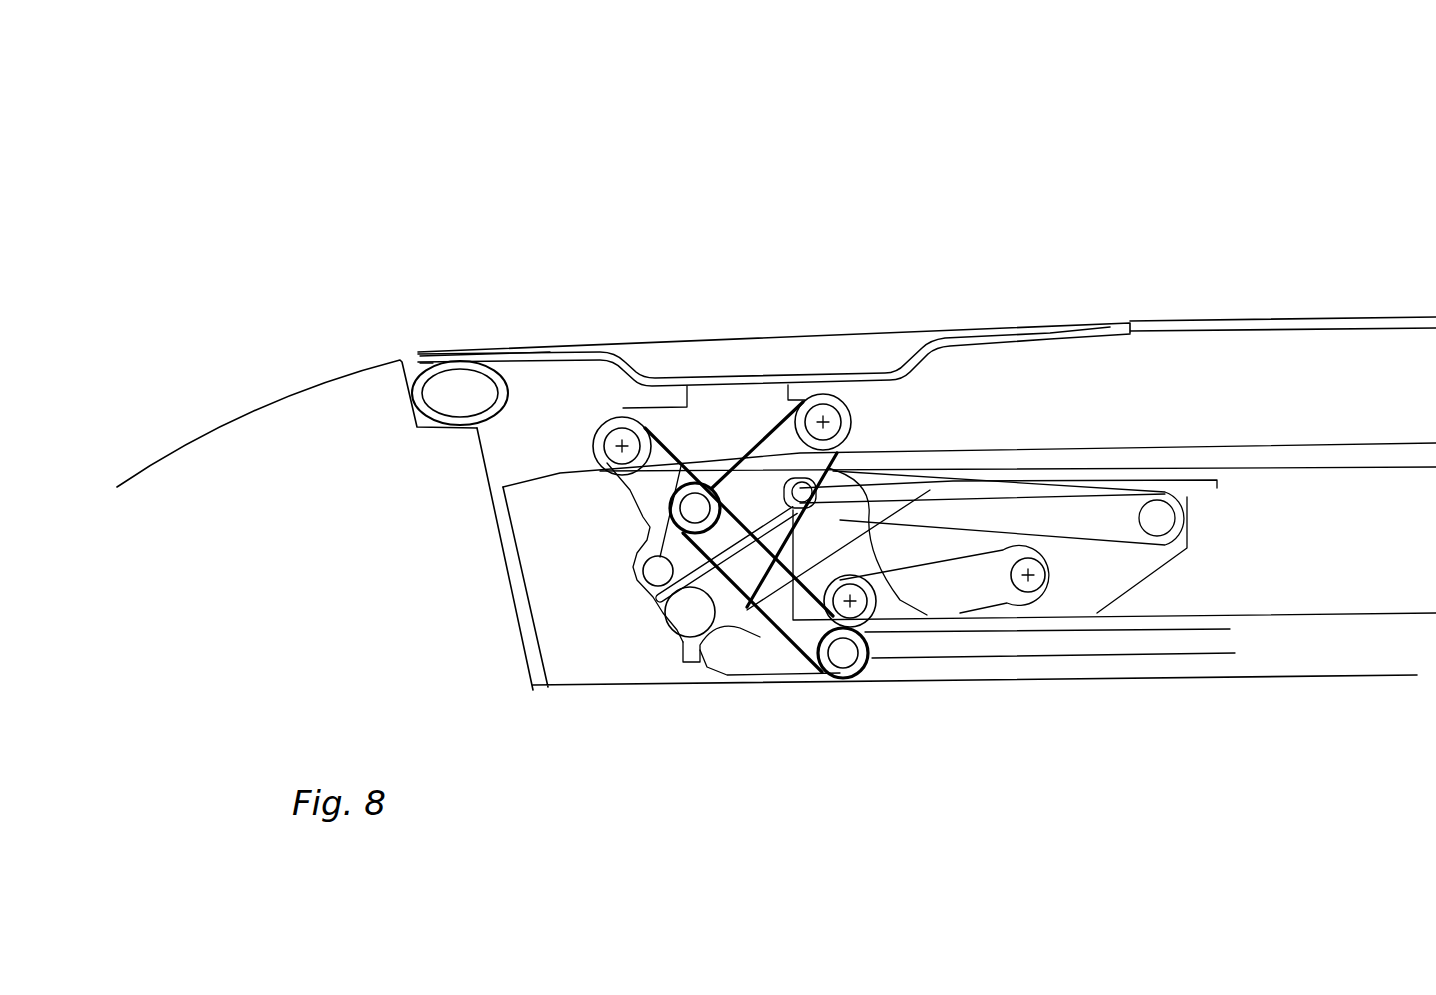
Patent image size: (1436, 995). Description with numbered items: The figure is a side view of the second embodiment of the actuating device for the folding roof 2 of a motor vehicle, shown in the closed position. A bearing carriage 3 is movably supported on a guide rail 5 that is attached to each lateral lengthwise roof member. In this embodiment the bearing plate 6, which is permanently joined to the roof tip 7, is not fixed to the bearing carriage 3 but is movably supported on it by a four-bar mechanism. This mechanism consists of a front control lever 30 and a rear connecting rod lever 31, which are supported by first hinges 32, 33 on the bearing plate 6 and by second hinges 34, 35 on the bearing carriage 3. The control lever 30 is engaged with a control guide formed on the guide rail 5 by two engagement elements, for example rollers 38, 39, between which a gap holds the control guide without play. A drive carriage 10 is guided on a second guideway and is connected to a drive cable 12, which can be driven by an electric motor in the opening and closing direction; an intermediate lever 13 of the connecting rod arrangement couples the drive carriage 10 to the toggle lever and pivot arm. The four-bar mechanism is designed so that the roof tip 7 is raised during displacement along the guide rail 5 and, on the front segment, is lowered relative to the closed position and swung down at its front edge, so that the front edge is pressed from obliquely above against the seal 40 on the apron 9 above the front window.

The folding roof 2 is at (1150, 303).
The bearing carriage 3 is at (1133, 566).
The guide rail 5 is at (622, 668).
The bearing plate 6 is at (742, 400).
The roof tip 7 is at (637, 357).
The apron 9 is at (263, 407).
The drive carriage 10 is at (770, 652).
The drive cable 12 is at (957, 647).
The intermediate lever 13 is at (745, 615).
The front control lever 30 is at (645, 497).
The rear connecting rod lever 31 is at (660, 557).
The first hinge 32 is at (622, 445).
The first hinge 33 is at (850, 412).
The second hinge 34 is at (870, 612).
The second hinge 35 is at (1028, 578).
The roller 38 is at (643, 571).
The roller 39 is at (697, 612).
The seal 40 is at (441, 378).